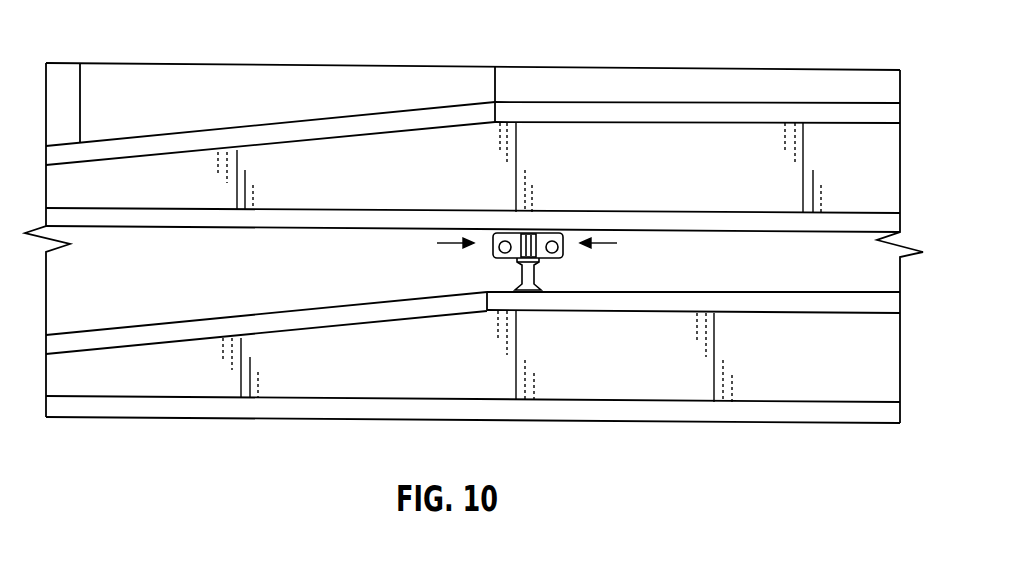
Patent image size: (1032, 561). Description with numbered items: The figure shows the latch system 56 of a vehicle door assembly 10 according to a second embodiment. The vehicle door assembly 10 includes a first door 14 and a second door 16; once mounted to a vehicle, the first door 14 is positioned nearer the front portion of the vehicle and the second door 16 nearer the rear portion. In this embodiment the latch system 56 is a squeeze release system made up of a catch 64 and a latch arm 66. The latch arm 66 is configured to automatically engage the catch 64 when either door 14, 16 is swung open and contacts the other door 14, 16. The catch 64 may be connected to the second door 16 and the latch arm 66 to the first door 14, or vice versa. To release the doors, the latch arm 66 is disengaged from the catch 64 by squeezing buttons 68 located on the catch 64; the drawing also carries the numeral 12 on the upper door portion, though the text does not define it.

The vehicle door assembly 10 is at (748, 25).
The first conveyor section 12 is at (383, 82).
The first door 14 is at (445, 370).
The second door 16 is at (583, 143).
The latch system 56 is at (448, 293).
The catch 64 is at (531, 233).
The latch arm 66 is at (540, 283).
The buttons 68 is at (493, 249).